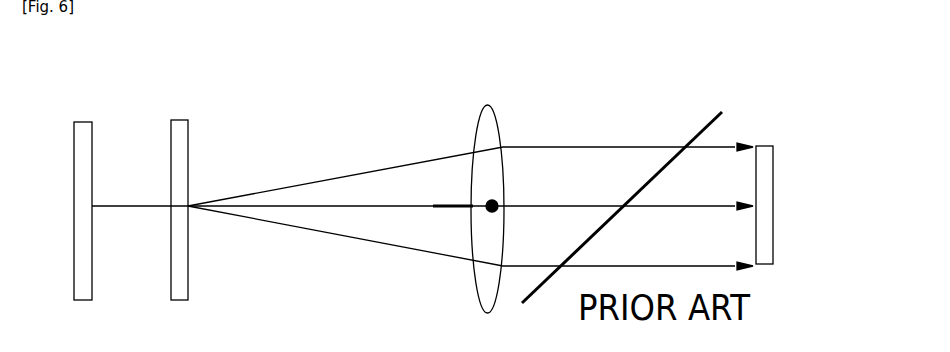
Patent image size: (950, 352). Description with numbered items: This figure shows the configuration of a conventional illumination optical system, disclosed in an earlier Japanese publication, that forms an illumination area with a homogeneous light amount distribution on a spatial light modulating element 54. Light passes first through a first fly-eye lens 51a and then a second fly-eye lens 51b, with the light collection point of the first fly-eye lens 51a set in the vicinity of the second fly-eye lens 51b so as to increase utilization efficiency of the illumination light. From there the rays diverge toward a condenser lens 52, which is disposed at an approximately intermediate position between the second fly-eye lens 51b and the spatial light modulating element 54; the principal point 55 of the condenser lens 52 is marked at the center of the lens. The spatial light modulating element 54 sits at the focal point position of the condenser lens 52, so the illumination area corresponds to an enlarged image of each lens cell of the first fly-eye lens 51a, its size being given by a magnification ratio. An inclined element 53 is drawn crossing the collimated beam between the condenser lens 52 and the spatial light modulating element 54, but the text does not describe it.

The first fly-eye lens 51a is at (83, 122).
The second fly-eye lens 51b is at (182, 120).
The condenser lens 52 is at (485, 107).
The oblique mirror / beam splitter 53 is at (703, 128).
The spatial light modulating element 54 is at (765, 143).
The principal point 55 is at (485, 212).